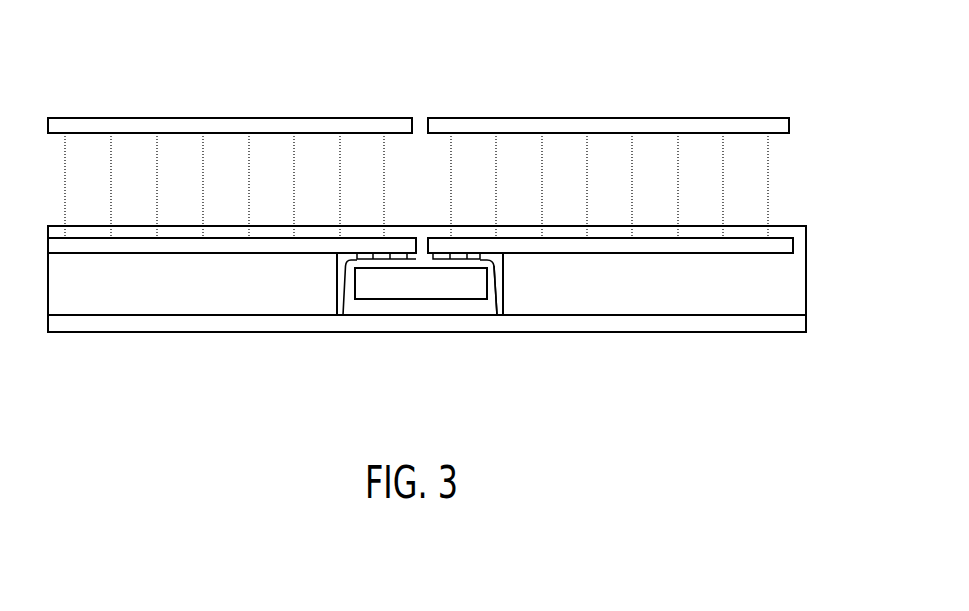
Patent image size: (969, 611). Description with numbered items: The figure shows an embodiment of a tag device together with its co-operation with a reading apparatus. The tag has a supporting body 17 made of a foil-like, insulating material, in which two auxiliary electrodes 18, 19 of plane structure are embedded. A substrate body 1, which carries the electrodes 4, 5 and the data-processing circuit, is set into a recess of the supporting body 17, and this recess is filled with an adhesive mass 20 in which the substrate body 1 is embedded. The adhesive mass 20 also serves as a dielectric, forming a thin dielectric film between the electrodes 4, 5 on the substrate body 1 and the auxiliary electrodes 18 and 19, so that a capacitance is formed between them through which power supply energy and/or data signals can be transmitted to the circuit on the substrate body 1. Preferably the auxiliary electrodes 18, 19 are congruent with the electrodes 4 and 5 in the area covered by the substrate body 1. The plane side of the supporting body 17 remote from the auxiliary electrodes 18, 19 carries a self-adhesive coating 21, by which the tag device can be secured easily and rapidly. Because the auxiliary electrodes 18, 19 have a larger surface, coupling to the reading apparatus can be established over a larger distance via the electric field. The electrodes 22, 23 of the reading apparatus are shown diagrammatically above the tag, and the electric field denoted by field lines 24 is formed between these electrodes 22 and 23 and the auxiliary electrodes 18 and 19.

The substrate body 1 is at (465, 287).
The electrode 4 is at (343, 315).
The electrode 5 is at (497, 315).
The supporting body 17 is at (427, 279).
The auxiliary electrode 18 is at (183, 248).
The auxiliary electrode 19 is at (578, 245).
The adhesive mass 20 is at (400, 305).
The self-adhesive coating 21 is at (288, 323).
The electrode of the reading apparatus 22 is at (307, 120).
The electrode of the reading apparatus 23 is at (497, 118).
The field lines 24 is at (768, 189).